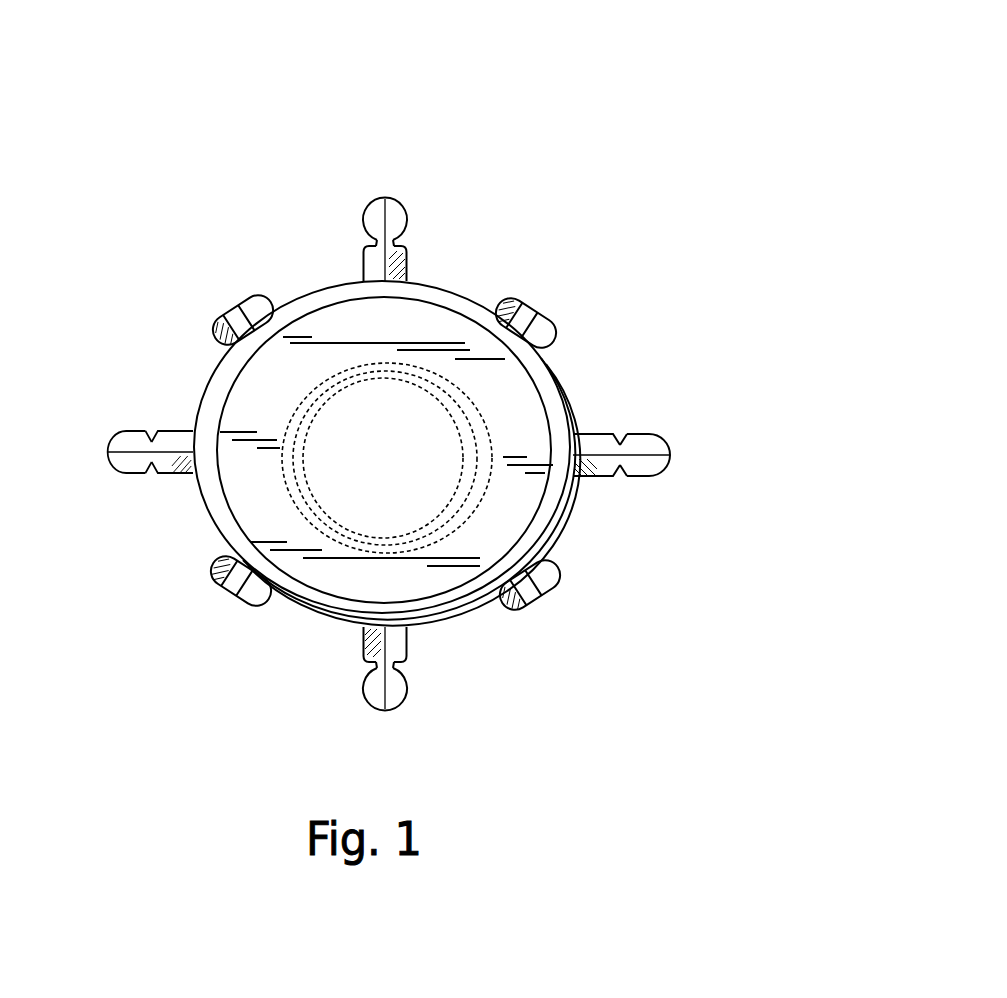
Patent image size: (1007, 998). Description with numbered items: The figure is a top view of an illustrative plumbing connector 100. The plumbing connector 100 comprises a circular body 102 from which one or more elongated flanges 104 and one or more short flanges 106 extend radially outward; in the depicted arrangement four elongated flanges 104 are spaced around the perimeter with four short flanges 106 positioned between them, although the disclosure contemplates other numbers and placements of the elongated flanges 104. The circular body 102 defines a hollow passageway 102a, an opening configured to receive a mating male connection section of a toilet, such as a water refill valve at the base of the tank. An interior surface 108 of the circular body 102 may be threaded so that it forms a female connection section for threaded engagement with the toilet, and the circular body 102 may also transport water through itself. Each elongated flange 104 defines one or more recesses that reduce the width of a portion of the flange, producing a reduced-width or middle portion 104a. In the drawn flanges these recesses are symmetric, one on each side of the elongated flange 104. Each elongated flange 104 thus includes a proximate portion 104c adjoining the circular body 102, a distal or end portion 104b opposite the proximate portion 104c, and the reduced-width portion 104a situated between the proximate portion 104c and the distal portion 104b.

The plumbing connector 100 is at (553, 65).
The circular body 102 is at (460, 287).
The hollow passageway 102a is at (250, 401).
The elongated flange 104 is at (390, 198).
The reduced-width portion 104a is at (403, 233).
The distal portion 104b is at (363, 198).
The proximate portion 104c is at (363, 258).
The short flange 106 is at (557, 315).
The interior surface 108 is at (250, 497).